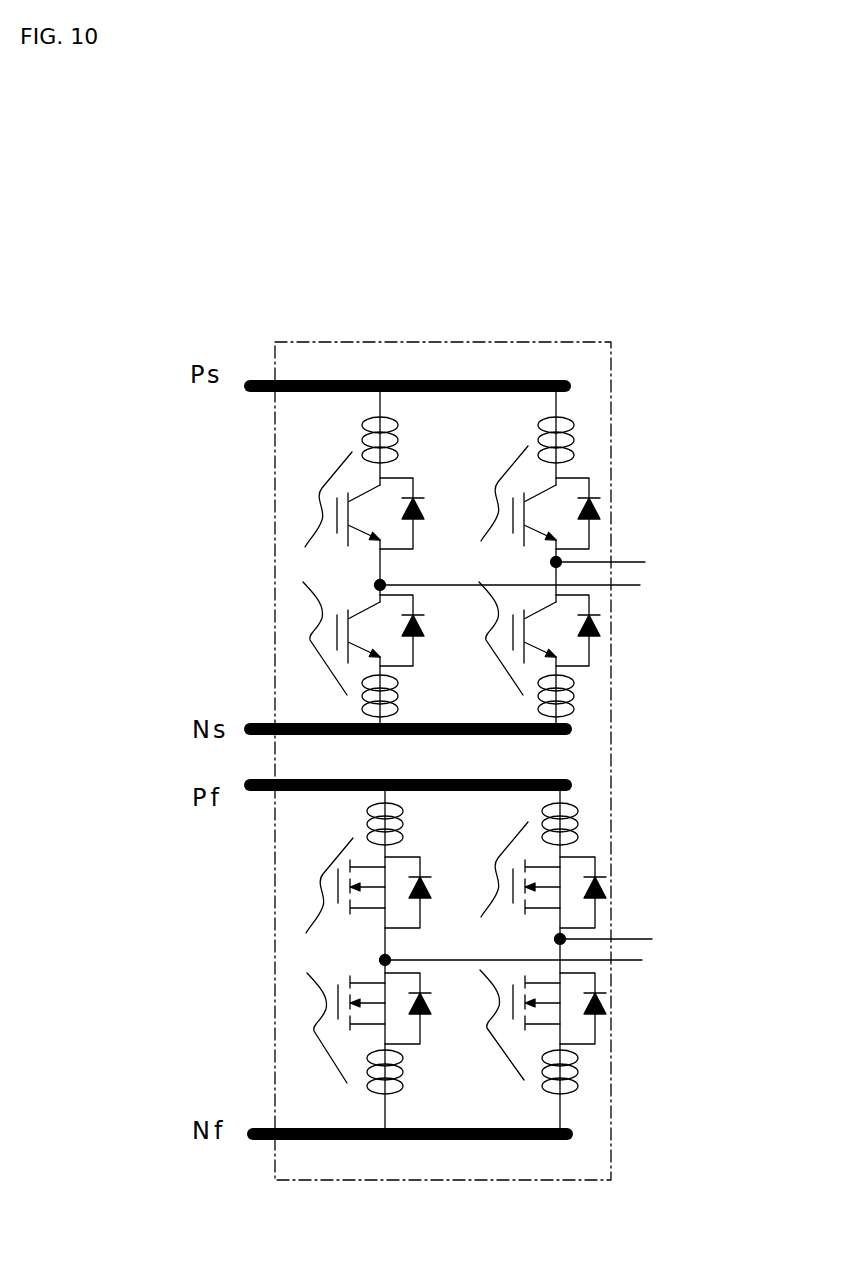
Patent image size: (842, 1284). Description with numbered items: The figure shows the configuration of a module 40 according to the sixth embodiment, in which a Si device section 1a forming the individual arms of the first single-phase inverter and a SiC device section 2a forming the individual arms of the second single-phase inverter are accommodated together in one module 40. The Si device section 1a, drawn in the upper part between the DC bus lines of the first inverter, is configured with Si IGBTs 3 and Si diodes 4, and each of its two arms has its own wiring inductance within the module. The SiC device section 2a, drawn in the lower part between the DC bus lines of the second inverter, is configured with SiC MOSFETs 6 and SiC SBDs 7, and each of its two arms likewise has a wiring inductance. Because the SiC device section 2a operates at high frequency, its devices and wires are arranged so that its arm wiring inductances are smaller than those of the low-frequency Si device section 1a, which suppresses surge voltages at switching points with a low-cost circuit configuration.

The module 40 is at (612, 380).
The Si device section 1a is at (498, 560).
The Si IGBT 3 is at (550, 523).
The Si diode 4 is at (603, 505).
The SiC device section 2a is at (491, 962).
The SiC MOSFET 6 is at (542, 913).
The SiC SBD 7 is at (612, 885).